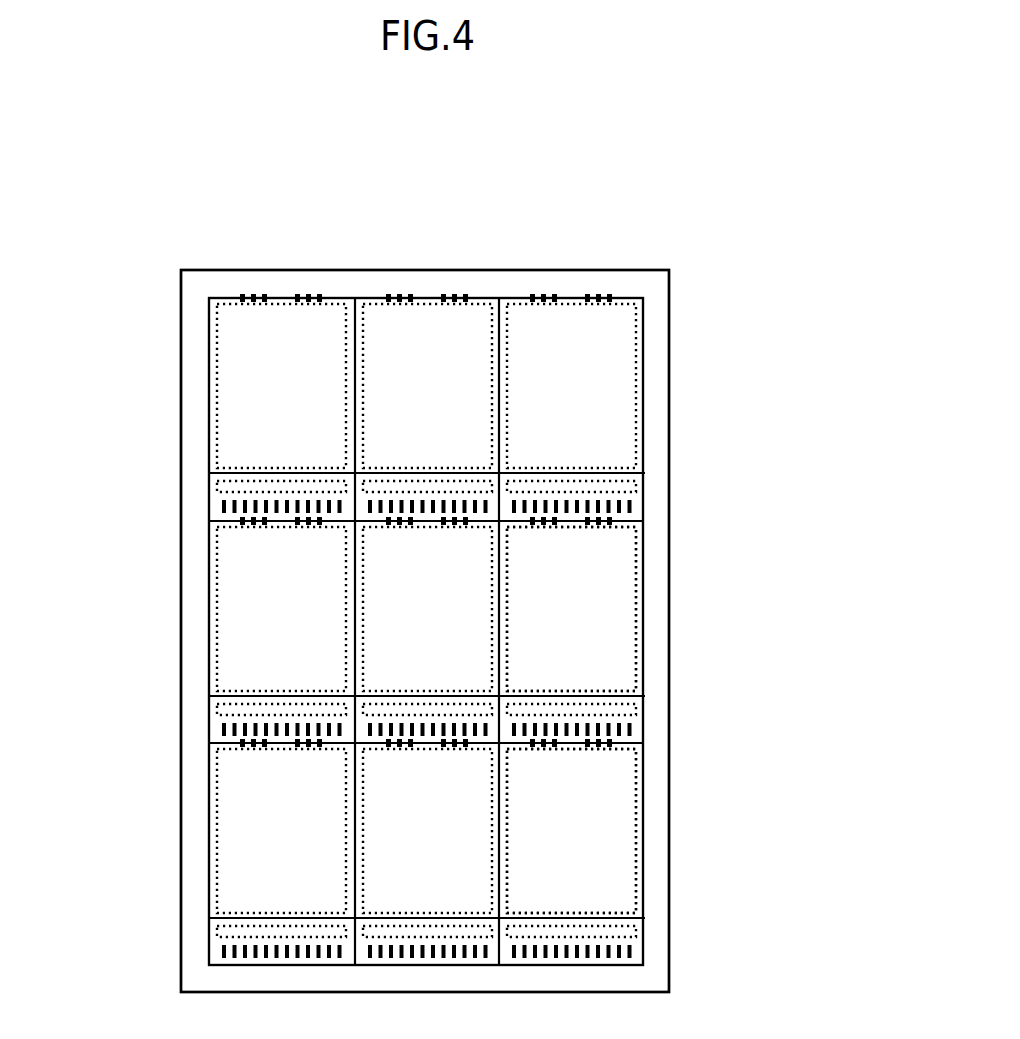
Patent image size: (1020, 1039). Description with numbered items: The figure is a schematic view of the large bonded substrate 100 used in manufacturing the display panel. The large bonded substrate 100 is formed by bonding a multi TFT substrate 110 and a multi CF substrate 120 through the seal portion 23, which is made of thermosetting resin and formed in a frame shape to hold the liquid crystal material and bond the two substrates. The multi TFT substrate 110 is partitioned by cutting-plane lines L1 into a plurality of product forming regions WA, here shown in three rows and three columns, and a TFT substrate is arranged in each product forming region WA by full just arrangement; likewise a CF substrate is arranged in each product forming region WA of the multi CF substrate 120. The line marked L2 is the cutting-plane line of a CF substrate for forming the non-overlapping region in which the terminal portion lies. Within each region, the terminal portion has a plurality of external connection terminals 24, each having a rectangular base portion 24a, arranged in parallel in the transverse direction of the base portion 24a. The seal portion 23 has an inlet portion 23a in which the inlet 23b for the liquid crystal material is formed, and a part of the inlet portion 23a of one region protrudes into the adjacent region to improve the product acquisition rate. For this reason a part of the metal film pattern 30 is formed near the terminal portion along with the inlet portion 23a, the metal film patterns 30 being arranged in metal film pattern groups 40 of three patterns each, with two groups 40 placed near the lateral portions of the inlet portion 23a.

The large bonded substrate 100 is at (441, 231).
The multi TFT substrate 110 is at (668, 378).
The multi CF substrate 120 is at (426, 631).
The product forming region WA is at (417, 567).
The cutting-plane line L1 is at (645, 308).
The cutting-plane line of CF substrate L2 is at (634, 473).
The seal portion 23 is at (635, 810).
The inlet portion 23a is at (585, 292).
The inlet 23b is at (563, 297).
The external connection terminal 24 is at (219, 727).
The base portion 24a is at (215, 747).
The metal film pattern 30 is at (538, 749).
The metal film pattern group 40 is at (323, 750).